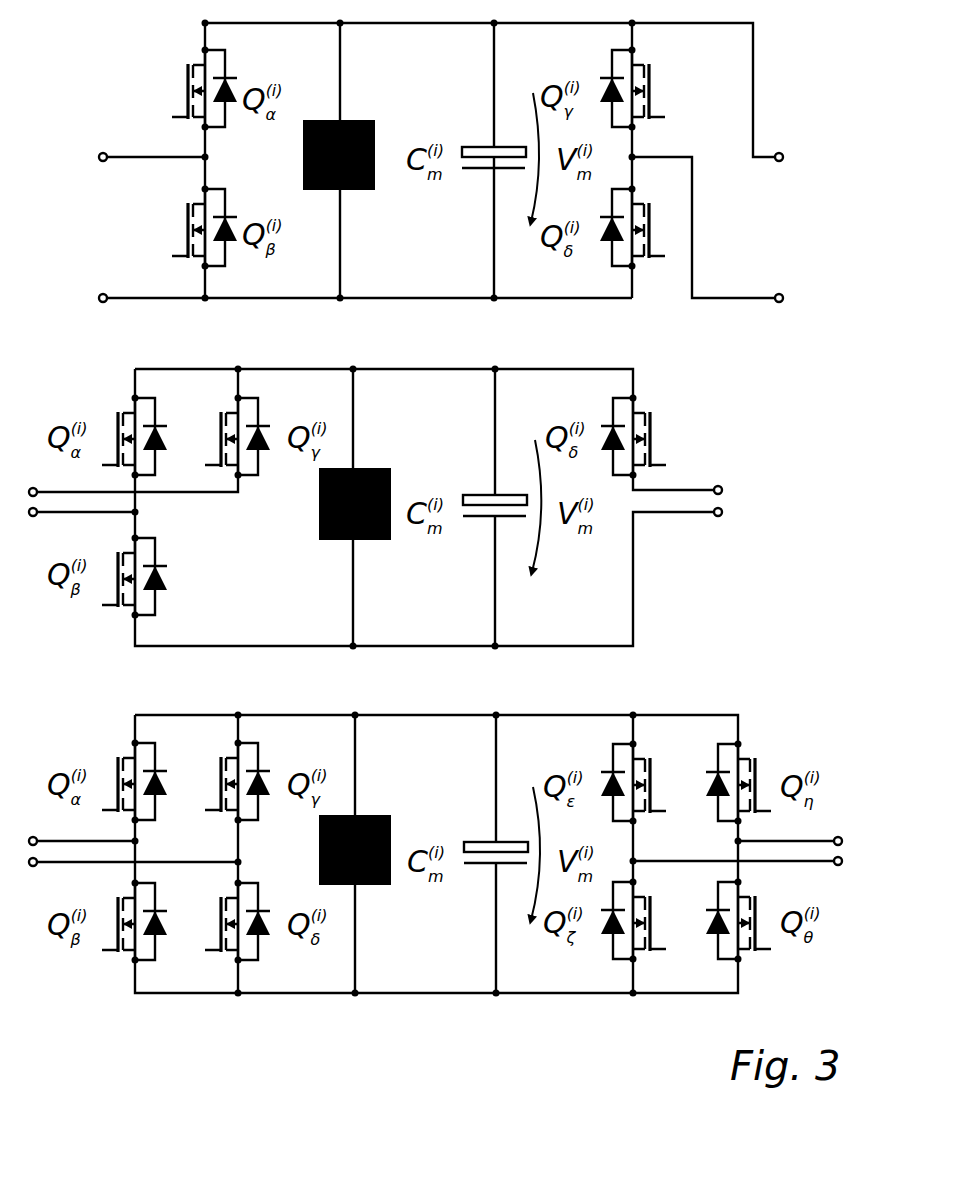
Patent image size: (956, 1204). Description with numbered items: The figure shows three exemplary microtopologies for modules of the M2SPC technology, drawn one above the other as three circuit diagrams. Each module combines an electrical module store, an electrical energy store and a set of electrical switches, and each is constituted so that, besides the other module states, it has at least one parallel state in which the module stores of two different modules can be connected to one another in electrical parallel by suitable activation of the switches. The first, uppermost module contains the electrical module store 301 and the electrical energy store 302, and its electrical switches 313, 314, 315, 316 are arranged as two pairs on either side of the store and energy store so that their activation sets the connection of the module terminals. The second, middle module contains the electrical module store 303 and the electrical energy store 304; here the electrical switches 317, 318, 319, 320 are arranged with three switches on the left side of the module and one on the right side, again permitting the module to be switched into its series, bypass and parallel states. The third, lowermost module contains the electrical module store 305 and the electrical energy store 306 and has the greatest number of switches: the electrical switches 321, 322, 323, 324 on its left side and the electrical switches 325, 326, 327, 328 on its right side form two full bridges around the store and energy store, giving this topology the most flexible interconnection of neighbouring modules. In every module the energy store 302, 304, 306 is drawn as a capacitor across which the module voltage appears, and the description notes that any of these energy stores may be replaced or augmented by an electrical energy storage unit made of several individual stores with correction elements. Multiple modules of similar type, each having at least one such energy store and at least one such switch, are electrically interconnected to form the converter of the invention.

The electrical module store 301 is at (357, 107).
The electrical energy store 302 is at (460, 180).
The electrical module store 303 is at (318, 546).
The electrical energy store 304 is at (458, 530).
The electrical module store 305 is at (388, 800).
The electrical energy store 306 is at (458, 880).
The electrical switch 313 is at (180, 88).
The electrical switch 314 is at (182, 228).
The electrical switch 315 is at (658, 90).
The electrical switch 316 is at (665, 228).
The electrical switch 317 is at (118, 414).
The electrical switch 318 is at (112, 600).
The electrical switch 319 is at (210, 420).
The electrical switch 320 is at (660, 438).
The electrical switch 321 is at (116, 750).
The electrical switch 322 is at (115, 960).
The electrical switch 323 is at (227, 742).
The electrical switch 324 is at (220, 960).
The electrical switch 325 is at (647, 742).
The electrical switch 326 is at (653, 958).
The electrical switch 327 is at (752, 742).
The electrical switch 328 is at (757, 958).